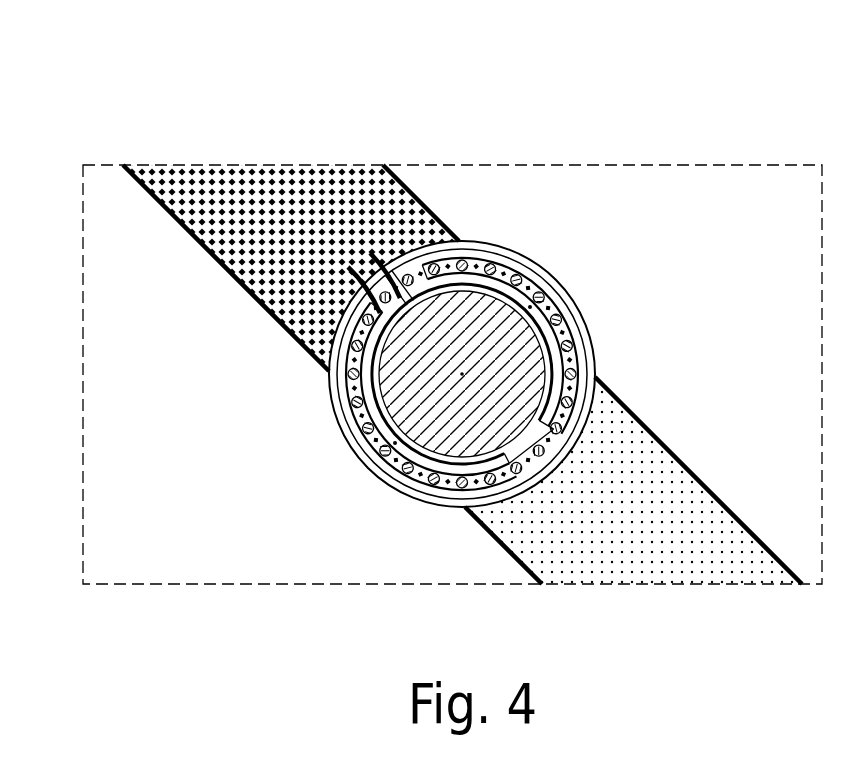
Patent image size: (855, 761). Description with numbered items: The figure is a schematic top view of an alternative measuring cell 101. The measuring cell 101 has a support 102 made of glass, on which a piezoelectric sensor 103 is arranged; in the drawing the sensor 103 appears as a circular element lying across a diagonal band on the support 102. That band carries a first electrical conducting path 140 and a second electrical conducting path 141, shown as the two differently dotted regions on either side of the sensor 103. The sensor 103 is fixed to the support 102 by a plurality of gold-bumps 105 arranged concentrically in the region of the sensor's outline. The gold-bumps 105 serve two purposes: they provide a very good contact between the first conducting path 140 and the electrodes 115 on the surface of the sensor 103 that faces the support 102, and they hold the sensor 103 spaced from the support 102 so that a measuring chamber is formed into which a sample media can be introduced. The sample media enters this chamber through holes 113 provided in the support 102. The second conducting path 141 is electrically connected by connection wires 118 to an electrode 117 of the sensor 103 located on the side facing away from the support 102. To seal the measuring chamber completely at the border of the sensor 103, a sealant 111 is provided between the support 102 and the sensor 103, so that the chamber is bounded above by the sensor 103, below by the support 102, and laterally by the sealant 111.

The measuring cell 101 is at (124, 82).
The support 102 is at (163, 574).
The piezoelectric sensor 103 is at (598, 190).
The gold-bumps 105 is at (362, 447).
The sealant 111 is at (583, 335).
The holes 113 is at (470, 369).
The electrodes 115 is at (533, 460).
The electrode 117 is at (392, 385).
The connection wires 118 is at (396, 250).
The first electrical conducting path 140 is at (582, 543).
The second electrical conducting path 141 is at (310, 165).